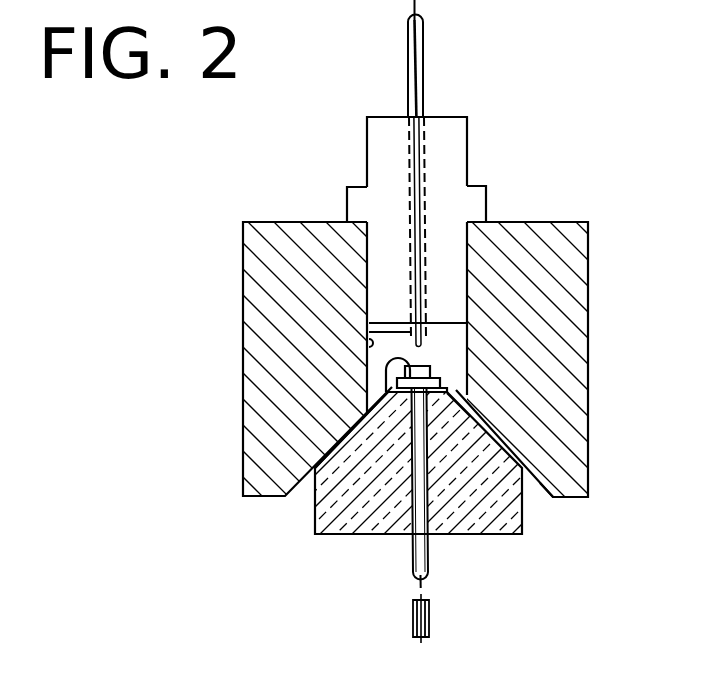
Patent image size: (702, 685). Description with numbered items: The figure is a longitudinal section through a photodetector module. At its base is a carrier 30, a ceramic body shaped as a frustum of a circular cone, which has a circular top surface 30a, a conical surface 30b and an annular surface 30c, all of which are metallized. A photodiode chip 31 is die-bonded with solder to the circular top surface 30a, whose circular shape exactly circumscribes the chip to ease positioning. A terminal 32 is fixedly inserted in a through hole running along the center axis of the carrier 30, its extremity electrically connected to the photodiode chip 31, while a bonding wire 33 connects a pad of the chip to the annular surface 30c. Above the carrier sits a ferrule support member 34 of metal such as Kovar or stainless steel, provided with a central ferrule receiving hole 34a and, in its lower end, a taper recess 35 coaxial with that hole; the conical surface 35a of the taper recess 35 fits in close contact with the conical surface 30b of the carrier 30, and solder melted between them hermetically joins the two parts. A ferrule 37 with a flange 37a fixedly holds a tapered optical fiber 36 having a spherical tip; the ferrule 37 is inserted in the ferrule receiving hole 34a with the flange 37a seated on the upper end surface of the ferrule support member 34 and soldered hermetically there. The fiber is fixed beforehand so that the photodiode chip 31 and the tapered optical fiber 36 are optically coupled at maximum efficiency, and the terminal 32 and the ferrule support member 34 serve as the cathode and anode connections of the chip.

The carrier 30 is at (463, 518).
The circular top surface 30a is at (440, 373).
The conical surface 30b is at (452, 400).
The annular surface 30c is at (445, 385).
The photodiode chip 31 is at (430, 366).
The terminal 32 is at (413, 615).
The bonding wire 33 is at (386, 382).
The ferrule support member 34 is at (577, 457).
The ferrule receiving hole 34a is at (369, 342).
The taper recess 35 is at (305, 503).
The conical surface of the taper recess 35a is at (540, 493).
The tapered optical fiber 36 is at (375, 331).
The ferrule 37 is at (453, 130).
The flange 37a is at (473, 197).